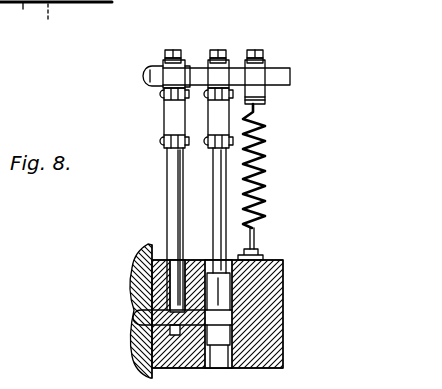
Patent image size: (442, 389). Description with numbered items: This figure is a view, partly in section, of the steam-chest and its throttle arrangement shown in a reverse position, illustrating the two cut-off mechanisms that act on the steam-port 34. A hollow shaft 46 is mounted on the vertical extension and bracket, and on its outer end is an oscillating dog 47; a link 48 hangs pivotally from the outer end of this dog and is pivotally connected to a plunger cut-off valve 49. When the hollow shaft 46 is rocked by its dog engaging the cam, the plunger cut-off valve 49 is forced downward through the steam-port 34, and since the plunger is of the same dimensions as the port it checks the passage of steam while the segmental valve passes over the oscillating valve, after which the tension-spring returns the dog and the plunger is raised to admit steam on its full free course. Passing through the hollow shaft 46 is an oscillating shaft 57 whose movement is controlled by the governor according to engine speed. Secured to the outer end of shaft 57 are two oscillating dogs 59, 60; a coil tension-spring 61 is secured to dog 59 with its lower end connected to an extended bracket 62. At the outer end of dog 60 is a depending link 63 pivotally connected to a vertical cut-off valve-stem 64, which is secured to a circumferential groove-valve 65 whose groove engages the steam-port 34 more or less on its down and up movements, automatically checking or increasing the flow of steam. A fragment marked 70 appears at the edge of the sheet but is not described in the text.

The adjacent figure element 70 is at (56, 17).
The steam-port 34 is at (160, 315).
The hollow shaft 46 is at (158, 70).
The oscillating dog 47 is at (181, 62).
The link 48 is at (177, 117).
The plunger cut-off valve 49 is at (175, 208).
The oscillating shaft 57 is at (270, 75).
The oscillating dog 59 is at (262, 62).
The oscillating dog 60 is at (228, 62).
The coil tension-spring 61 is at (266, 148).
The extended bracket 62 is at (263, 253).
The depending link 63 is at (221, 121).
The vertical cut-off valve-stem 64 is at (226, 196).
The circumferential groove-valve 65 is at (218, 289).